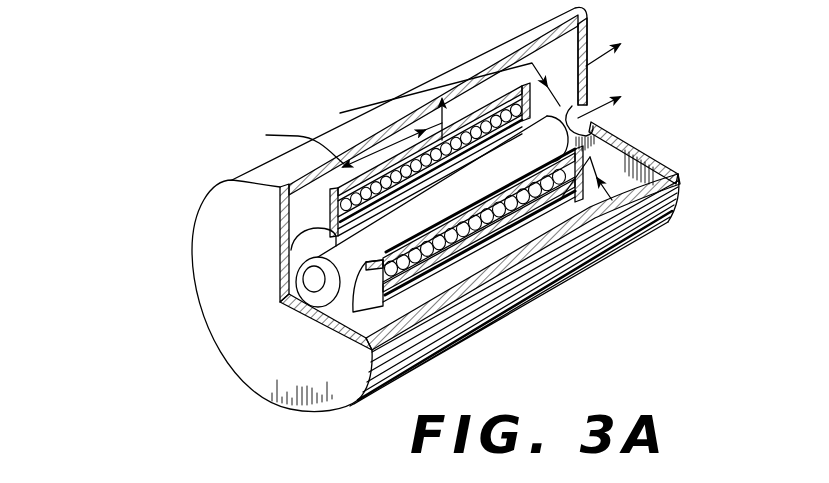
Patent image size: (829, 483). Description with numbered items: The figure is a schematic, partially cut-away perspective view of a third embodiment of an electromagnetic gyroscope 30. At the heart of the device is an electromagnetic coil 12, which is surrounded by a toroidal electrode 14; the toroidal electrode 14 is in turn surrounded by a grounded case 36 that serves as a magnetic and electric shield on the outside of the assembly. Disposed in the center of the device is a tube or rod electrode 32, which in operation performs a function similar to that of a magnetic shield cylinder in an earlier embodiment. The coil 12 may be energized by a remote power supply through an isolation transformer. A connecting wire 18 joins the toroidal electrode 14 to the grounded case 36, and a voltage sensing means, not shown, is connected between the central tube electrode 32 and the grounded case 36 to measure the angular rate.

The electromagnetic gyroscope 30 is at (156, 232).
The grounded case 36 is at (210, 282).
The tube or rod electrode 32 is at (582, 270).
The toroidal electrode 14 is at (466, 284).
The electromagnetic coil 12 is at (596, 130).
The connecting wire 18 is at (410, 122).